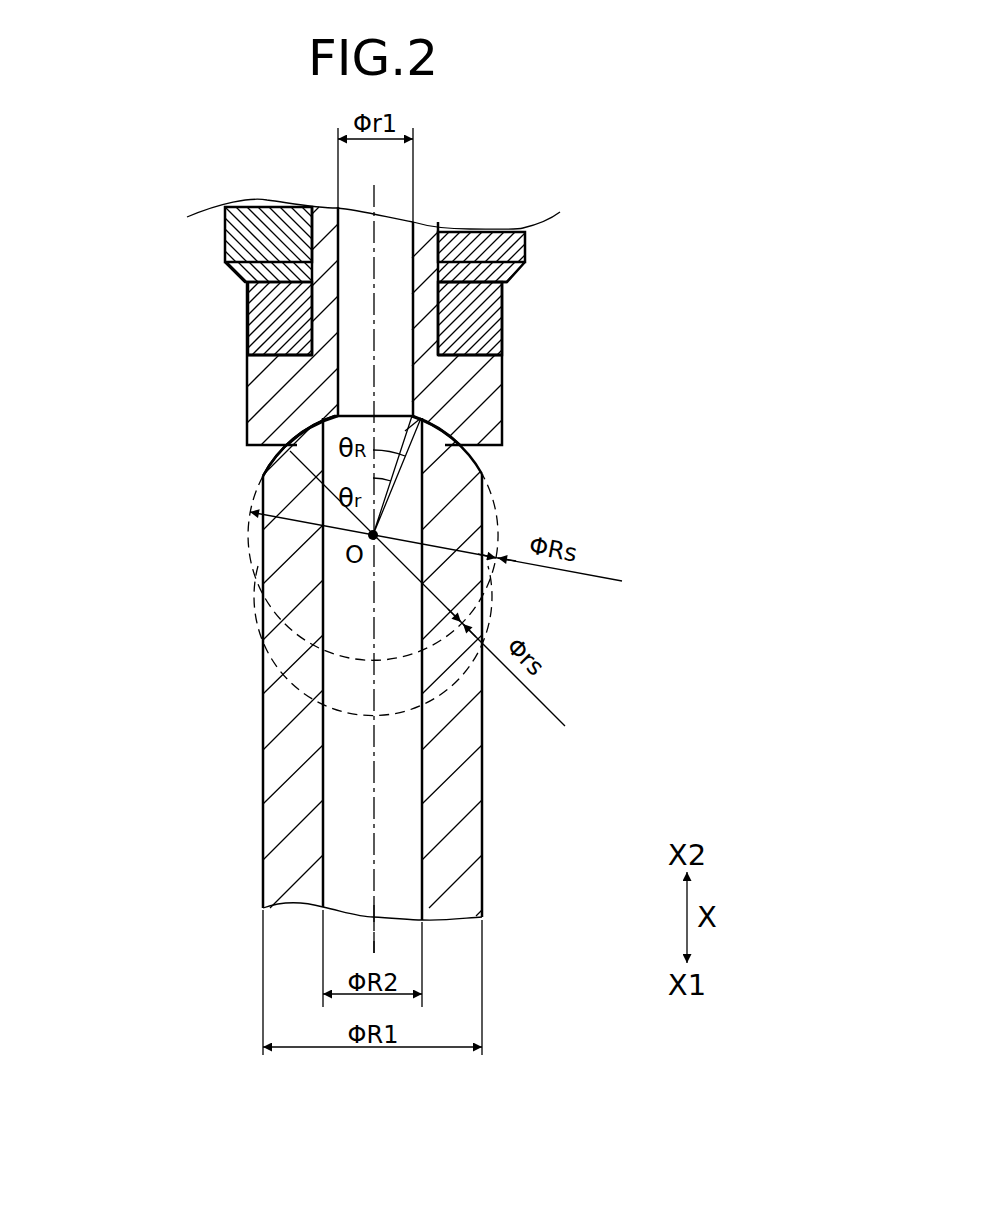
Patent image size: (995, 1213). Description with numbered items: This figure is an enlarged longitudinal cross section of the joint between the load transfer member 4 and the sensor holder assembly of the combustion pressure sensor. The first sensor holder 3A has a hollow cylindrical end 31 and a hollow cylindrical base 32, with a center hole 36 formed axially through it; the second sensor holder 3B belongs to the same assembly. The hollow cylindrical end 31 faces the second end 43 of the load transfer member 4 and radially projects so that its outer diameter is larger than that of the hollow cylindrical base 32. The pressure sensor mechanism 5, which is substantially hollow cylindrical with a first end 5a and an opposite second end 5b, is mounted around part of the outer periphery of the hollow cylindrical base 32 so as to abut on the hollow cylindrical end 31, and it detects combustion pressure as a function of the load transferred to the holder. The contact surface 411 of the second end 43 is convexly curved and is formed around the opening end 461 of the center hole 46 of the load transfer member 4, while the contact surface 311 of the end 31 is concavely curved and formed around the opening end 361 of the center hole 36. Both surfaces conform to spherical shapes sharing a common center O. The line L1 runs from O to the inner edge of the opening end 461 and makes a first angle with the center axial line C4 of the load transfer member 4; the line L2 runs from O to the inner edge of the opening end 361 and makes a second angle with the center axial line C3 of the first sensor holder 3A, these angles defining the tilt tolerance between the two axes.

The hollow cylindrical base 32 is at (300, 250).
The center hole 36 is at (338, 314).
The opening end of the center hole 361 is at (348, 410).
The first sensor holder 3A is at (450, 408).
The second sensor holder 3B is at (485, 250).
The pressure sensor mechanism 5 is at (478, 342).
The first end 5a is at (502, 355).
The second end 5b is at (507, 282).
The load transfer member 4 is at (445, 805).
The center hole 46 is at (323, 604).
The opening end of the center hole 461 is at (290, 451).
The hollow cylindrical end 31 is at (440, 427).
The contact surface 311 is at (436, 430).
The second end 43 is at (450, 470).
The contact surface 411 is at (413, 424).
The center axial line C3 is at (378, 243).
The center axial line C4 is at (372, 925).
The line L1 is at (487, 592).
The line L2 is at (400, 483).